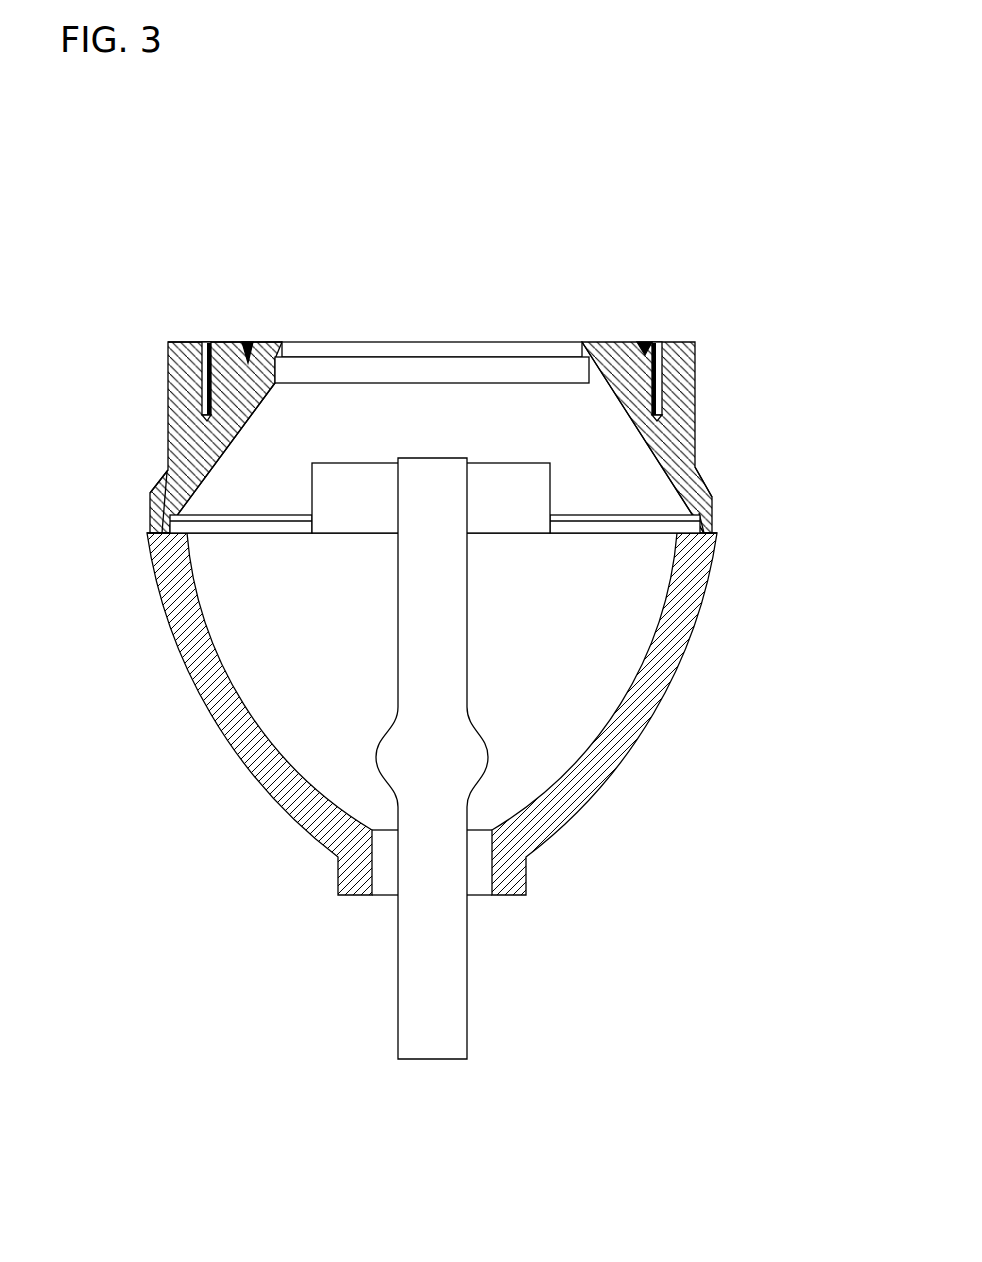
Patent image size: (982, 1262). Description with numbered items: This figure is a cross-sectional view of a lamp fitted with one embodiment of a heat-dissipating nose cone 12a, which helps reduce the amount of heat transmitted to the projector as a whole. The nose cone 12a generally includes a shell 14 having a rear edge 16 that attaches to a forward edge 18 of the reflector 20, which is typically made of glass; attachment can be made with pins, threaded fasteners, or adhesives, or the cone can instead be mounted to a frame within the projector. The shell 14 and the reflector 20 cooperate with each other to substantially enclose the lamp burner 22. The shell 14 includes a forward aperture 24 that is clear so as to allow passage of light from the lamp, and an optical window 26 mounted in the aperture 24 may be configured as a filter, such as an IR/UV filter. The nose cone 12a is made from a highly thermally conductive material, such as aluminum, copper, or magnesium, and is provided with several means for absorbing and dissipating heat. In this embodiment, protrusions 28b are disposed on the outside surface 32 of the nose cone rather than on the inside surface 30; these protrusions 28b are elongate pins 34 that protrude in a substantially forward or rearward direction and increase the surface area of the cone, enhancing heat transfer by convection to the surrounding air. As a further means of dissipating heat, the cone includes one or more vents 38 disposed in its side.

The heat-dissipating nose cone 12a is at (200, 267).
The protrusions on the outside surface 28b is at (183, 343).
The shell 14 is at (188, 440).
The rear edge 16 is at (160, 493).
The forward edge 18 is at (172, 527).
The reflector 20 is at (602, 780).
The lamp burner 22 is at (423, 625).
The forward aperture 24 is at (468, 350).
The optical window 26 is at (420, 370).
The inside surface 30 is at (594, 400).
The outside surface 32 is at (705, 478).
The elongate pins 34 is at (643, 348).
The vents 38 is at (513, 487).